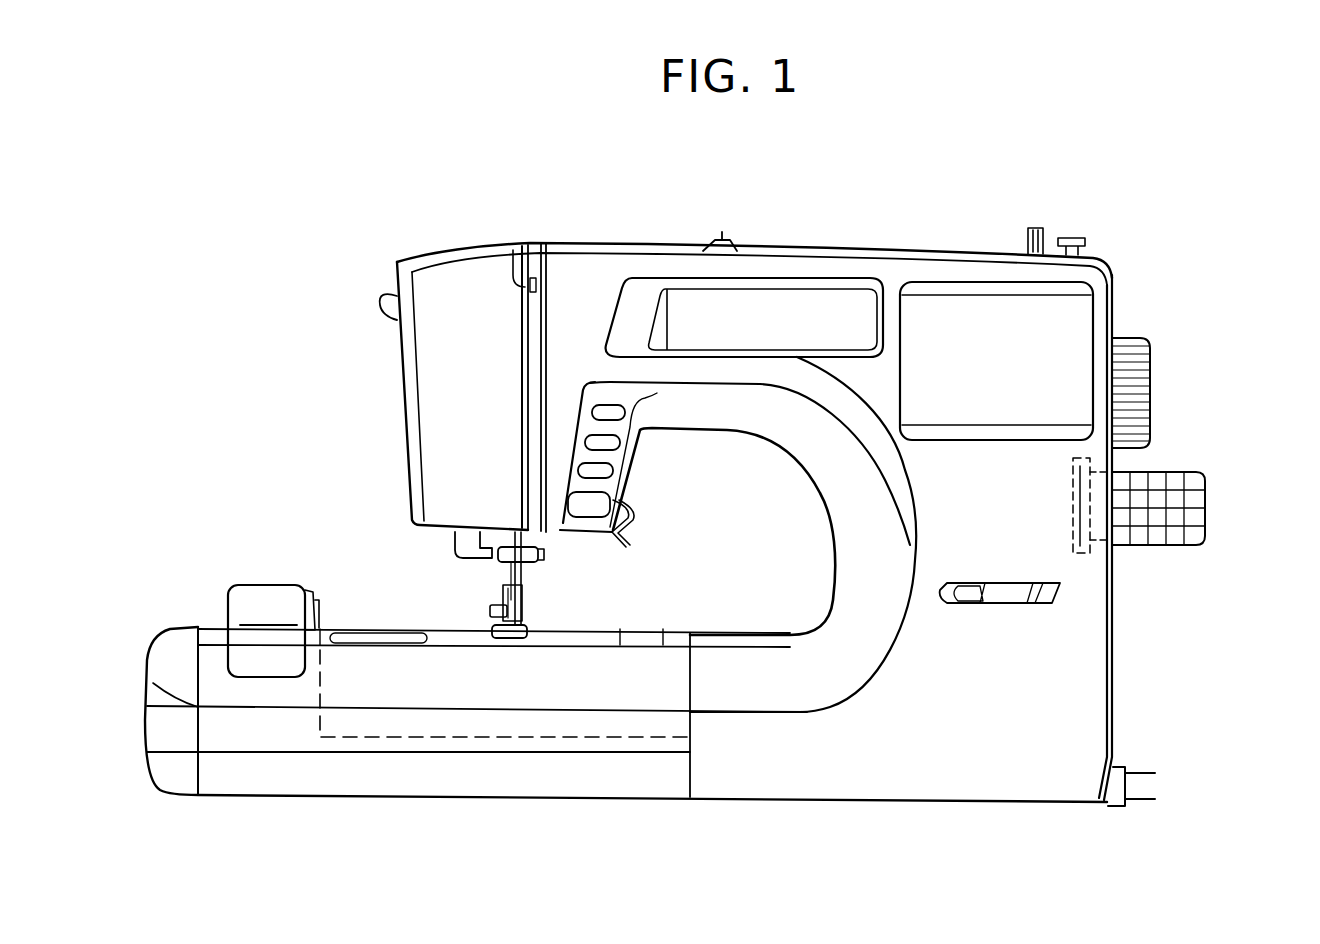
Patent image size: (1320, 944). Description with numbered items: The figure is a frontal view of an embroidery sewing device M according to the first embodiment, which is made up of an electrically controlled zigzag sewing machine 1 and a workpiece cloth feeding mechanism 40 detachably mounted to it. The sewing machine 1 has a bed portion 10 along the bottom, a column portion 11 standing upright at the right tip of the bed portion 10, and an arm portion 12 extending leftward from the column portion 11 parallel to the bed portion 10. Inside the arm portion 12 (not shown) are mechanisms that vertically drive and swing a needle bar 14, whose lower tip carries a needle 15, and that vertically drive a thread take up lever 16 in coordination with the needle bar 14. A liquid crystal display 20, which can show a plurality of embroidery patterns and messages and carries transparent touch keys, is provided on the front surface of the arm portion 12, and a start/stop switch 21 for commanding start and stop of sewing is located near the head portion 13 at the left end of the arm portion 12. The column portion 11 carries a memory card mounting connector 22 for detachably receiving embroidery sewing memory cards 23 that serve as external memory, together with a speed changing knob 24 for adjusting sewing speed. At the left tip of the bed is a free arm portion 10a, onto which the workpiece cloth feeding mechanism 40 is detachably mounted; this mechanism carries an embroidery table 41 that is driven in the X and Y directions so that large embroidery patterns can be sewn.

The sewing machine 1 is at (1163, 233).
The bed portion 10 is at (658, 660).
The free arm portion 10a is at (500, 740).
The column portion 11 is at (905, 535).
The arm portion 12 is at (602, 268).
The head portion 13 is at (440, 444).
The needle bar 14 is at (495, 545).
The needle 15 is at (520, 593).
The thread take up lever 16 is at (532, 270).
The liquid crystal display 20 is at (948, 300).
The start/stop switch 21 is at (598, 498).
The memory card mounting connector 22 is at (1075, 495).
The embroidery sewing memory card 23 is at (1208, 505).
The speed changing knob 24 is at (1030, 603).
The workpiece cloth feeding mechanism 40 is at (219, 525).
The embroidery table 41 is at (273, 585).
The embroidery sewing device M is at (346, 314).